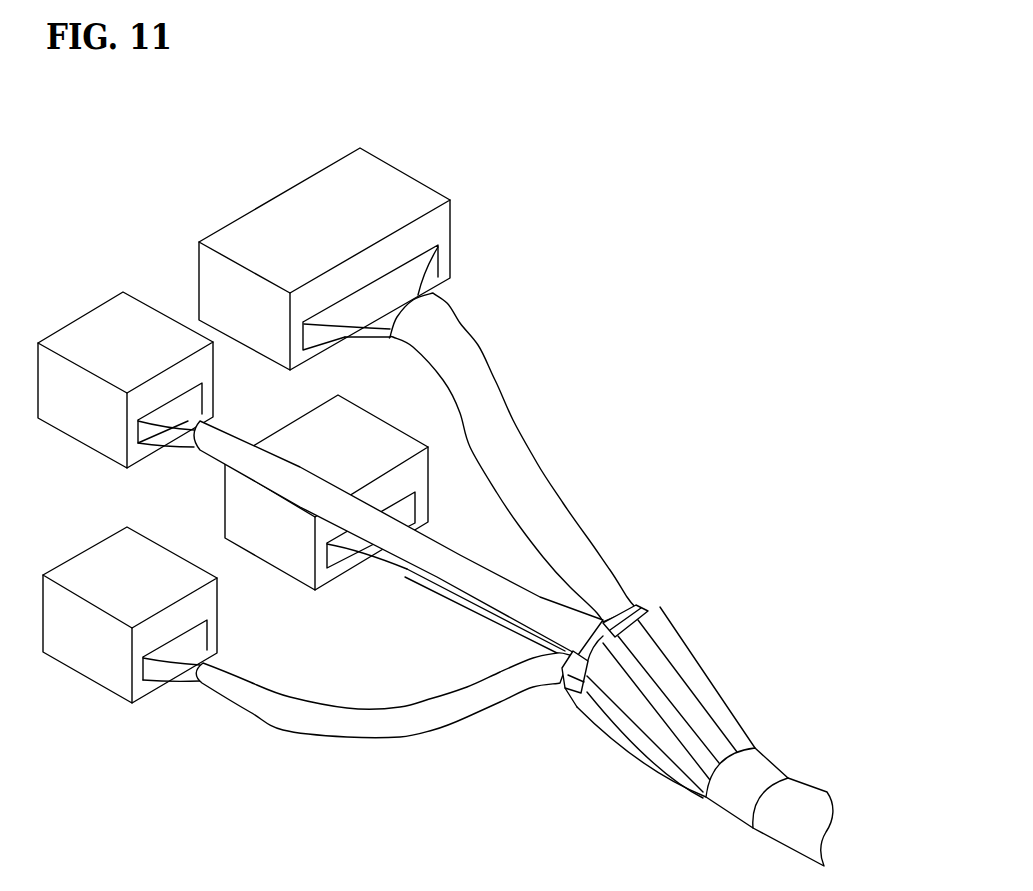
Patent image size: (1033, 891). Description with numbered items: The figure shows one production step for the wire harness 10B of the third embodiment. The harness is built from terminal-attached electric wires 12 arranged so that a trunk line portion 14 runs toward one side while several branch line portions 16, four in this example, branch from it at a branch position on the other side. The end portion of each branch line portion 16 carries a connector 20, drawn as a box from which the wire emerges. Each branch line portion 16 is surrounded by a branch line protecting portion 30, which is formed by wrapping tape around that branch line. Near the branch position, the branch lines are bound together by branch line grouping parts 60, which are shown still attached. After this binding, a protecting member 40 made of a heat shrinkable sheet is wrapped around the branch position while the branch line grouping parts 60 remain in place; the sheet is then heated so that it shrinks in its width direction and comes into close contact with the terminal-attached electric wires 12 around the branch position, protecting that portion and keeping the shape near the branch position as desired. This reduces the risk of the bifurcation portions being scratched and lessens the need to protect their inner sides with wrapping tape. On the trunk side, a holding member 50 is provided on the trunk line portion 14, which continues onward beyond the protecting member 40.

The wire harness 10B is at (256, 160).
The terminal-attached electric wire 12 is at (335, 494).
The trunk line portion 14 is at (775, 828).
The branch line portion 16 is at (406, 277).
The connector 20 is at (399, 186).
The branch line protecting portion 30 is at (508, 436).
The protecting member 40 is at (704, 672).
The holding member 50 is at (732, 801).
The branch line grouping part 60 is at (640, 603).